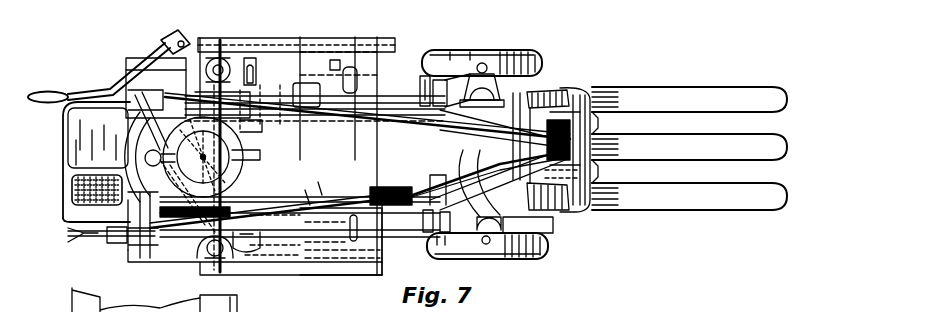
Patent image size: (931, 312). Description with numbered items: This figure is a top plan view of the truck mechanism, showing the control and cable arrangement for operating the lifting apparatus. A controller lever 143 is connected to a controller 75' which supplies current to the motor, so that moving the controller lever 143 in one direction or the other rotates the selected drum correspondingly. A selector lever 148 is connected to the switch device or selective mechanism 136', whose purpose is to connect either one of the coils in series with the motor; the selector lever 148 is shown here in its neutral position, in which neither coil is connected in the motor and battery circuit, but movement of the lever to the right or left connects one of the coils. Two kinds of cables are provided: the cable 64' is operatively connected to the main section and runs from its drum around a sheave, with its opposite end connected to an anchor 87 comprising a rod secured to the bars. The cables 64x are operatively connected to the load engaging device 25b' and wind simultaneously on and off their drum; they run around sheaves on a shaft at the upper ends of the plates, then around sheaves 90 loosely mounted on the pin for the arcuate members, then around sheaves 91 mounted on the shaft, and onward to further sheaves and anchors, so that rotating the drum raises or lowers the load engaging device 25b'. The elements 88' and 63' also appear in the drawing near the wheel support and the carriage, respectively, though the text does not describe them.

The selector lever 148 is at (183, 57).
The selective mechanism 136' is at (273, 51).
The anchor 87 is at (252, 128).
The cable 64' is at (367, 118).
The cables 64x is at (357, 190).
The rod support post 88' is at (425, 195).
The sheaves 90 is at (490, 238).
The lift carriage bracket 63' is at (581, 140).
The sheaves 91 is at (560, 156).
The load engaging device 25b' is at (689, 166).
The controller lever 143 is at (220, 276).
The controller 75' is at (249, 264).